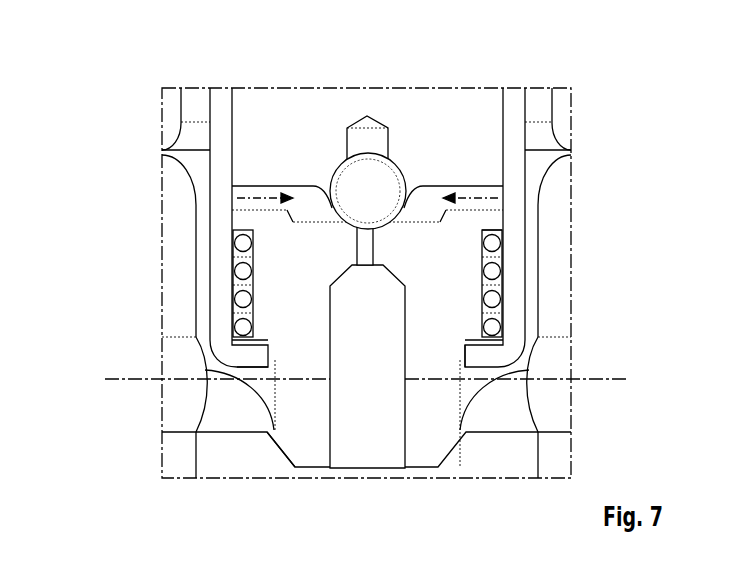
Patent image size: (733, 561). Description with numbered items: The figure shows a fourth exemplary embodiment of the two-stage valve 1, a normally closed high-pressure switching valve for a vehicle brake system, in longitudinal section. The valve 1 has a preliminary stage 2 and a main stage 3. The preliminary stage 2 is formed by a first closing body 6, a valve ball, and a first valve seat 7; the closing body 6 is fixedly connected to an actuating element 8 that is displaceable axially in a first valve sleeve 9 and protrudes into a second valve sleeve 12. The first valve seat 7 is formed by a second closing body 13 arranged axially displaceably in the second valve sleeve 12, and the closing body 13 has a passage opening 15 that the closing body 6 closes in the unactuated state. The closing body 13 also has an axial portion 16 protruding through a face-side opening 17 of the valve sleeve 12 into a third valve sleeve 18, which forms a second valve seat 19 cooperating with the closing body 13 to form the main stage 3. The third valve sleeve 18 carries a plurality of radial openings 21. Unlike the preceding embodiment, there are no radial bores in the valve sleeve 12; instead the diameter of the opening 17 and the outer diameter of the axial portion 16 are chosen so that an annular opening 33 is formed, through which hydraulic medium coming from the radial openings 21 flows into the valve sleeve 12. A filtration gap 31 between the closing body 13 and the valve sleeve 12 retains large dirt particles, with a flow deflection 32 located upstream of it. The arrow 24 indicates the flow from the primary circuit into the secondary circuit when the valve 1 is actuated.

The valve 1 is at (95, 76).
The preliminary stage 2 is at (315, 172).
The main stage 3 is at (273, 467).
The first closing body 6 is at (360, 182).
The first valve seat 7 is at (413, 248).
The actuating element 8 is at (448, 150).
The first valve sleeve 9 is at (563, 107).
The second valve sleeve 12 is at (598, 193).
The second closing body 13 is at (443, 390).
The passage opening 15 is at (357, 246).
The axial portion 16 is at (438, 467).
The face-side opening 17 is at (284, 365).
The third valve sleeve 18 is at (512, 463).
The second valve seat 19 is at (444, 433).
The radial openings 21 is at (137, 408).
The arrow 24 is at (673, 377).
The filtration gap 31 is at (509, 228).
The flow deflection 32 is at (500, 247).
The annular opening 33 is at (448, 367).